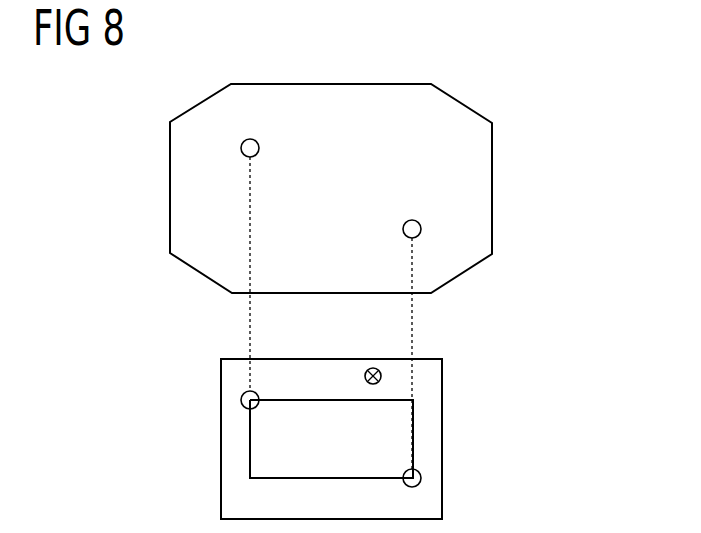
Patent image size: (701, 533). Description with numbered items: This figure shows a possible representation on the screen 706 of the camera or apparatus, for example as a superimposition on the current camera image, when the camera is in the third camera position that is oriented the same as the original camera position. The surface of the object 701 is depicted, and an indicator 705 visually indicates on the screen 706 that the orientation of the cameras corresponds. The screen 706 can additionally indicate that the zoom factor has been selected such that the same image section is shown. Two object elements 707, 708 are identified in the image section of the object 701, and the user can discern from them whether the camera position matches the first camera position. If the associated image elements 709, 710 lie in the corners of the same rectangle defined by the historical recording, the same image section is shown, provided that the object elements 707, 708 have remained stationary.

The object 701 is at (170, 193).
The indicator 705 is at (370, 368).
The screen 706 is at (443, 407).
The object element 707 is at (252, 139).
The object element 708 is at (421, 227).
The image element 709 is at (243, 397).
The image element 710 is at (420, 475).